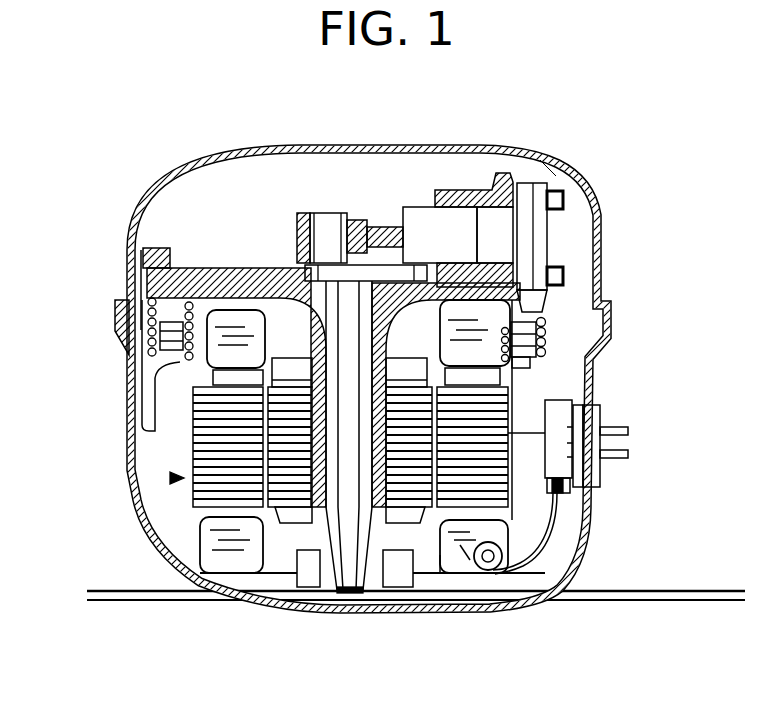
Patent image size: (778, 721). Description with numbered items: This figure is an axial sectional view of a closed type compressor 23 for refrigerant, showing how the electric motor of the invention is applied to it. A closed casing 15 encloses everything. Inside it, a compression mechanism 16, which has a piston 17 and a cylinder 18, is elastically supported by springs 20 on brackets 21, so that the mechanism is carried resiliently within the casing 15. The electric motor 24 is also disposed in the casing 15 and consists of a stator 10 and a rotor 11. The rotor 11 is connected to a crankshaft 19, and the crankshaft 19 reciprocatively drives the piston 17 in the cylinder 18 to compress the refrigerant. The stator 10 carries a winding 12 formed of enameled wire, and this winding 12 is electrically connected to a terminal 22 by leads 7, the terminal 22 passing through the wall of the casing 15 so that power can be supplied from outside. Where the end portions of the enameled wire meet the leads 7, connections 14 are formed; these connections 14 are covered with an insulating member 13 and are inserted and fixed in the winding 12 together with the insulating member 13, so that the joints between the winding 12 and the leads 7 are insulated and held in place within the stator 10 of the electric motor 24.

The leads 7 is at (582, 554).
The stator 10 is at (492, 415).
The rotor 11 is at (390, 562).
The winding 12 is at (457, 560).
The insulating member 13 is at (467, 565).
The connections 14 is at (493, 568).
The closed casing 15 is at (182, 177).
The compression mechanism 16 is at (551, 178).
The piston 17 is at (452, 228).
The cylinder 18 is at (508, 184).
The crankshaft 19 is at (328, 226).
The springs 20 is at (140, 291).
The brackets 21 is at (155, 373).
The terminal 22 is at (600, 399).
The closed type compressor 23 is at (423, 114).
The electric motor 24 is at (176, 478).